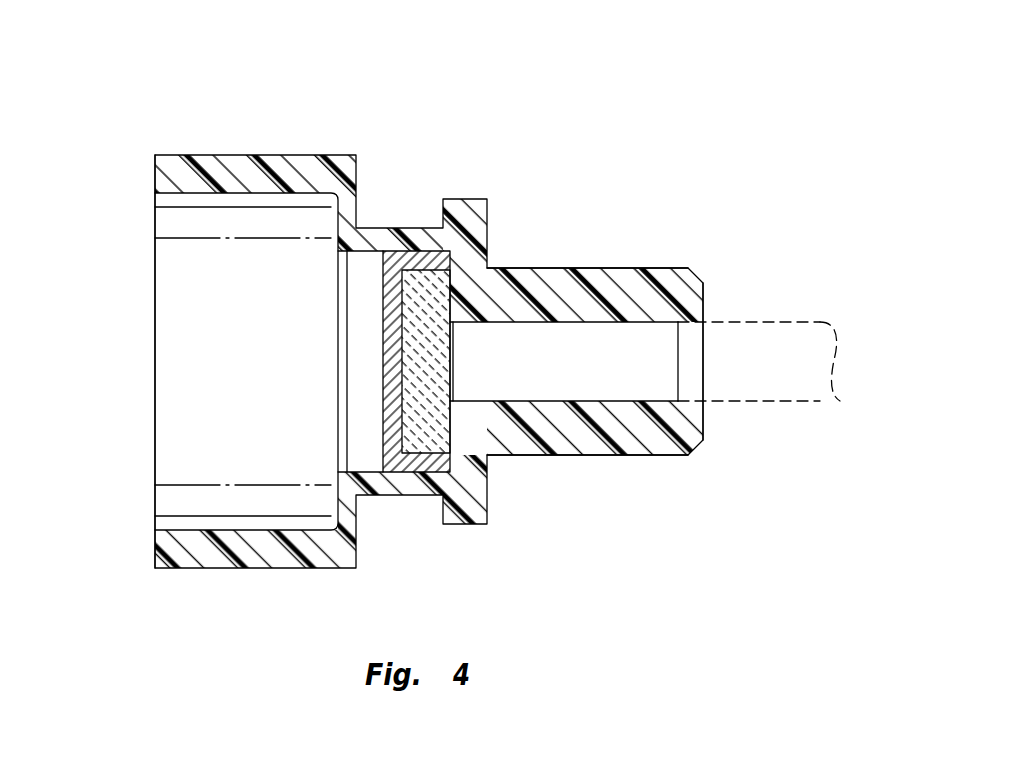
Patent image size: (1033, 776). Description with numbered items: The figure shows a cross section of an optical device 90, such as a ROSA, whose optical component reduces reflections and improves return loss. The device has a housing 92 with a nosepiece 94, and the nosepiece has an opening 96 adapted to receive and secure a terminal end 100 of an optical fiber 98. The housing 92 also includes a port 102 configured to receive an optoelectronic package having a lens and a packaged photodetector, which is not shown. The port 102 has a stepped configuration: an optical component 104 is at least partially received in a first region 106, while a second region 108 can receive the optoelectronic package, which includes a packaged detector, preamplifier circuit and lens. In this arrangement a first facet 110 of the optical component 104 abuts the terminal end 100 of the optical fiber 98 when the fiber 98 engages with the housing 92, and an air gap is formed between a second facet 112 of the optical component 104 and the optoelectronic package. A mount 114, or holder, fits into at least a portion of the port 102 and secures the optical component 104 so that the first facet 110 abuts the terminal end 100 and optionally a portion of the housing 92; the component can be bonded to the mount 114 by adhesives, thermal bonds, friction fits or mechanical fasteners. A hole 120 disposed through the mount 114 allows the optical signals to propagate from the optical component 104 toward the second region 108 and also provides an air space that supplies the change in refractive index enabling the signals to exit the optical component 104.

The optical device 90 is at (500, 130).
The housing 92 is at (303, 153).
The nosepiece 94 is at (615, 268).
The opening 96 is at (695, 373).
The optical fiber 98 is at (820, 378).
The terminal end 100 is at (455, 360).
The port 102 is at (155, 277).
The optical component 104 is at (473, 413).
The first region 106 is at (358, 452).
The second region 108 is at (188, 453).
The first facet 110 is at (452, 323).
The second facet 112 is at (403, 375).
The mount 114 is at (398, 470).
The hole 120 is at (392, 325).